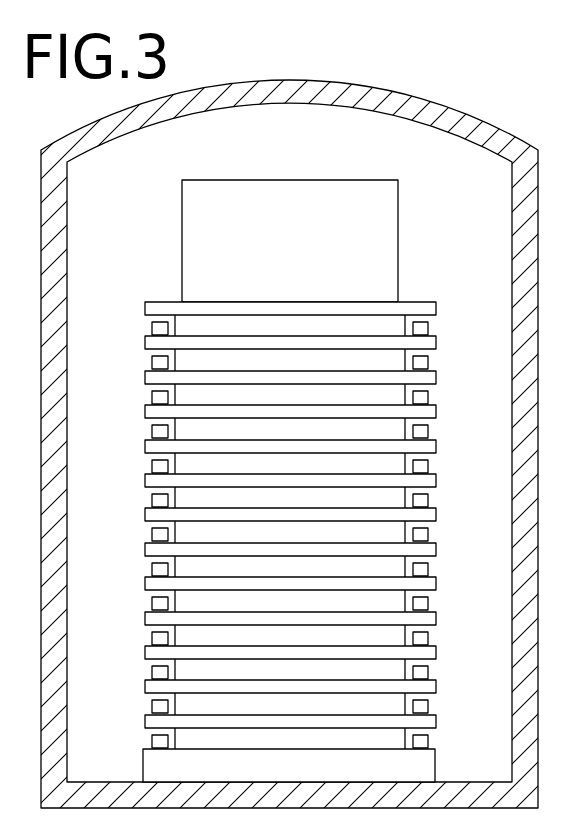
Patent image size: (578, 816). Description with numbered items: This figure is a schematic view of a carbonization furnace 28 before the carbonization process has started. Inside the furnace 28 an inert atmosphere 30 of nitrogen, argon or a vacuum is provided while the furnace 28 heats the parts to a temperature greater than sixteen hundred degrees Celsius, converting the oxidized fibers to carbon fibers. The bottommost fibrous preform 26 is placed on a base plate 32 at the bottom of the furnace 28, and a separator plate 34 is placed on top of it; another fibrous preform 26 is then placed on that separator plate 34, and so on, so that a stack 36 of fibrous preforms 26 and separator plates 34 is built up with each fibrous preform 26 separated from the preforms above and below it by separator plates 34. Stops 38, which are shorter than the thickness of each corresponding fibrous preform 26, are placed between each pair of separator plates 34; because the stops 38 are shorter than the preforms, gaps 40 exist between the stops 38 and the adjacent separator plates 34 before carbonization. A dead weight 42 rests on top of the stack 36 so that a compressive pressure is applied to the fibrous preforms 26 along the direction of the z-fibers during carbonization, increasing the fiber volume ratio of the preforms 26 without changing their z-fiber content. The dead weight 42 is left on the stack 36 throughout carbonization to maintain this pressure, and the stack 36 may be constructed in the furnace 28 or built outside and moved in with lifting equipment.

The fibrous preform 26 is at (368, 328).
The furnace 28 is at (408, 94).
The inert atmosphere 30 is at (453, 178).
The base plate 32 is at (438, 765).
The separator plate 34 is at (144, 307).
The stack 36 is at (158, 290).
The stop 38 is at (149, 362).
The gap 40 is at (149, 327).
The dead weight 42 is at (180, 212).